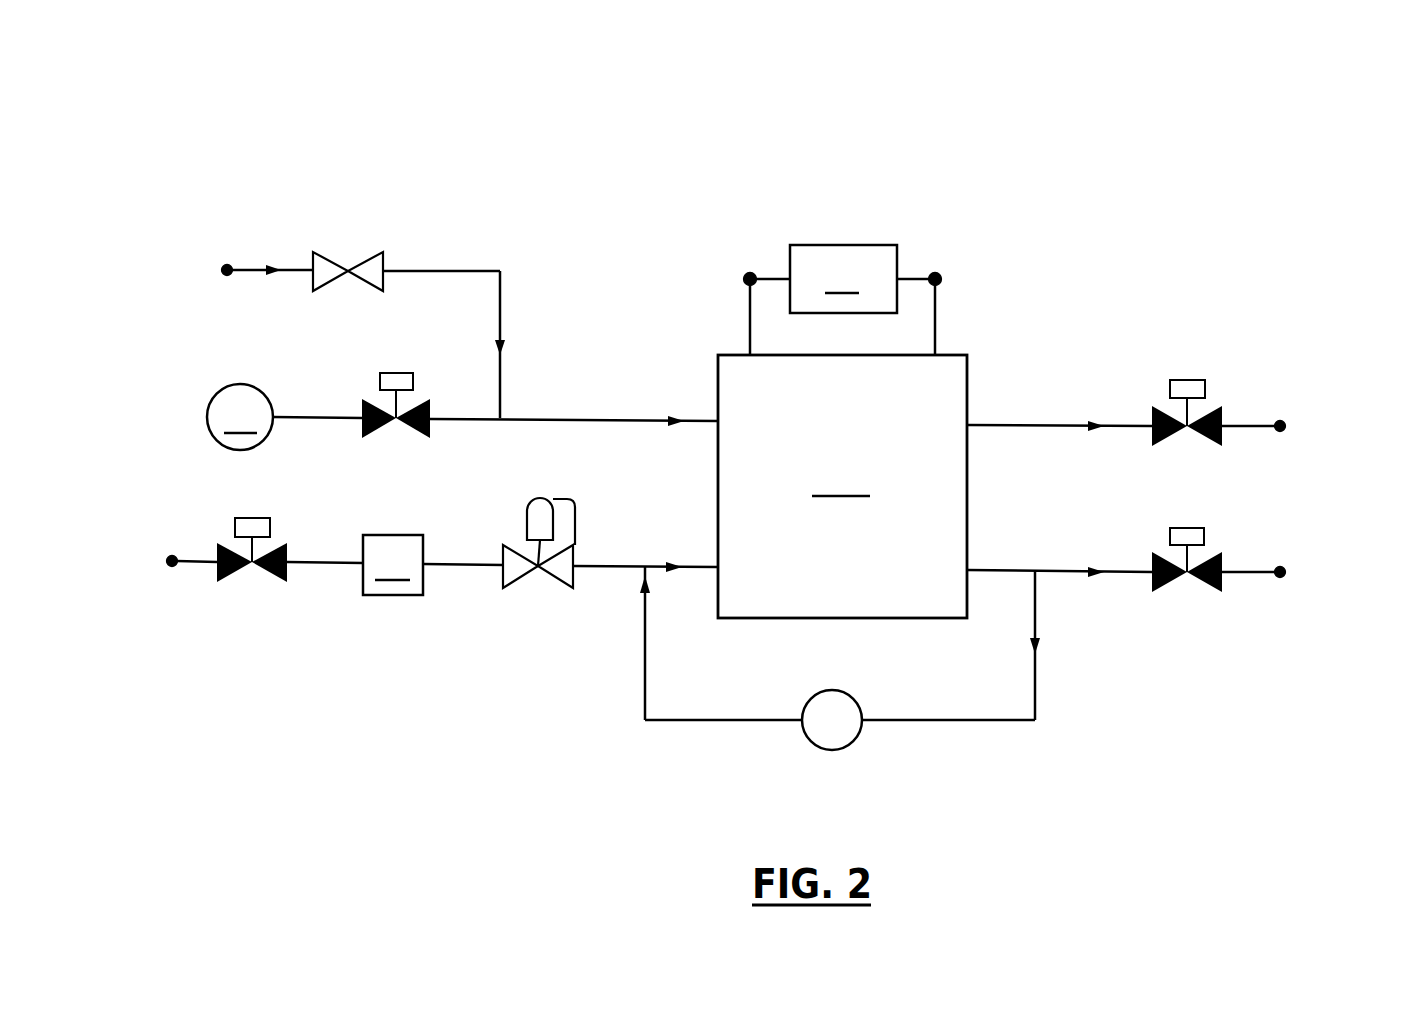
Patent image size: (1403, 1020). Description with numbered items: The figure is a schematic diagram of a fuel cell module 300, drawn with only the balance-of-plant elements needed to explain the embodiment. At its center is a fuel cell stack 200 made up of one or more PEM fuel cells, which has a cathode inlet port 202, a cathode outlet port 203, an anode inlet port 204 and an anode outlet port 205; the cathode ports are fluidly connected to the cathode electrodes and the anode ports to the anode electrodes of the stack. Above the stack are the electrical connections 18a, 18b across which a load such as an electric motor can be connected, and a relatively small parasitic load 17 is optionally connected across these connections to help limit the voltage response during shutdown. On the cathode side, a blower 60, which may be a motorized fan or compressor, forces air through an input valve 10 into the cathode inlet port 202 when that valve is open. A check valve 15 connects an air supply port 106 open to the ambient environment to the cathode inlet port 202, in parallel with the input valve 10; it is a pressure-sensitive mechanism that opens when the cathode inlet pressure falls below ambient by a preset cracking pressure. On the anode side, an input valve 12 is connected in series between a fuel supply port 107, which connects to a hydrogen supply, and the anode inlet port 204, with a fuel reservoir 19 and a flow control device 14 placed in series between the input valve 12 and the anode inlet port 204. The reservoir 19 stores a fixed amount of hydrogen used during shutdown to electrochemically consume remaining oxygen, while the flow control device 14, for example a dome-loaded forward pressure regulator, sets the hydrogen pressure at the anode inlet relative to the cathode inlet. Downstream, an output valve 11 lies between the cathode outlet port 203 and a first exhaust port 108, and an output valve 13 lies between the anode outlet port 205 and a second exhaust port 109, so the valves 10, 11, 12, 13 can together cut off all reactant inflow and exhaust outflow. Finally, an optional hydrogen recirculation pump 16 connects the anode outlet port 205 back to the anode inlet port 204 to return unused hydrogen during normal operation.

The fuel cell module 300 is at (602, 111).
The air supply port 106 is at (228, 264).
The check valve 15 is at (372, 256).
The blower 60 is at (240, 417).
The input valve 10 is at (380, 386).
The fuel supply port 107 is at (172, 567).
The input valve 12 is at (235, 527).
The fuel reservoir 19 is at (393, 565).
The flow control device 14 is at (527, 518).
The anode inlet port 204 is at (660, 563).
The cathode inlet port 202 is at (690, 420).
The parasitic load 17 is at (842, 279).
The electrical connection 18b is at (750, 317).
The electrical connection 18a is at (945, 318).
The fuel cell stack 200 is at (842, 486).
The cathode outlet port 203 is at (1020, 423).
The output valve 11 is at (1190, 380).
The first exhaust port 108 is at (1280, 421).
The anode outlet port 205 is at (1048, 568).
The output valve 13 is at (1204, 535).
The second exhaust port 109 is at (1280, 567).
The hydrogen recirculation pump 16 is at (852, 744).